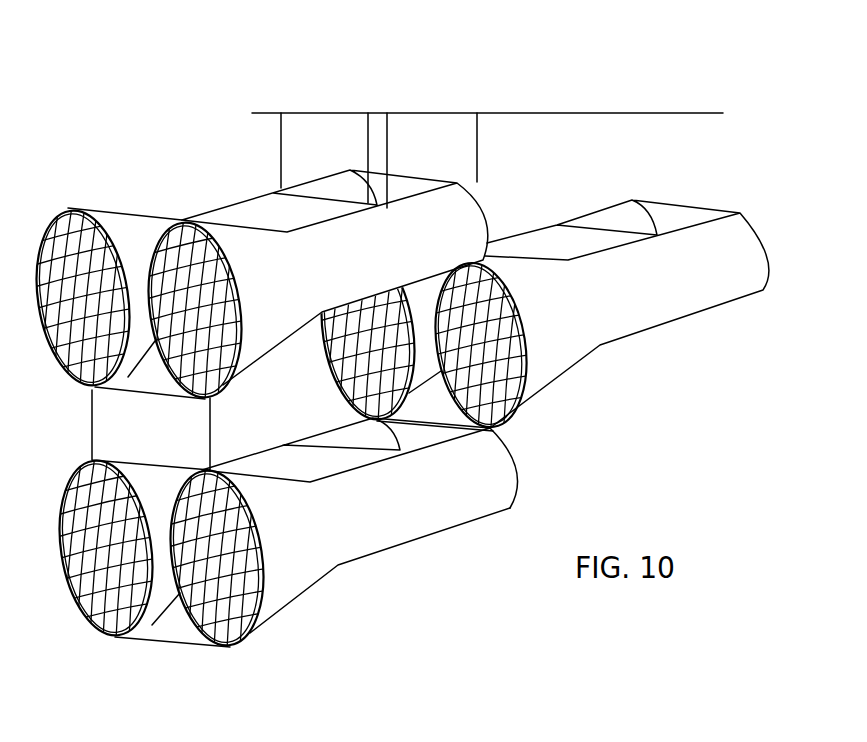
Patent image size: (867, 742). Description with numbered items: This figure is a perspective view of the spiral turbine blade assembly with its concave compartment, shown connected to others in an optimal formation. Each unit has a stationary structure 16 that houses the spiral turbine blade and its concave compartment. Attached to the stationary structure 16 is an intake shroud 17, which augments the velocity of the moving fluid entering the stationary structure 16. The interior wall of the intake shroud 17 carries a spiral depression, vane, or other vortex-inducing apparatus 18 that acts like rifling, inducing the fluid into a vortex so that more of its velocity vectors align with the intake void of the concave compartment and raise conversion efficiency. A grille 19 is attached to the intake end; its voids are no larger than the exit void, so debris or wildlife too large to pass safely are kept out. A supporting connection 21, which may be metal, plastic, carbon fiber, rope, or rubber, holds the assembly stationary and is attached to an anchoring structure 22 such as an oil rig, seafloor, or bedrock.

The stationary structure 16 is at (462, 508).
The intake shroud 17 is at (293, 613).
The vortex-inducing apparatus 18 is at (263, 557).
The grille 19 is at (247, 638).
The supporting connection 21 is at (477, 132).
The anchoring structure 22 is at (570, 77).